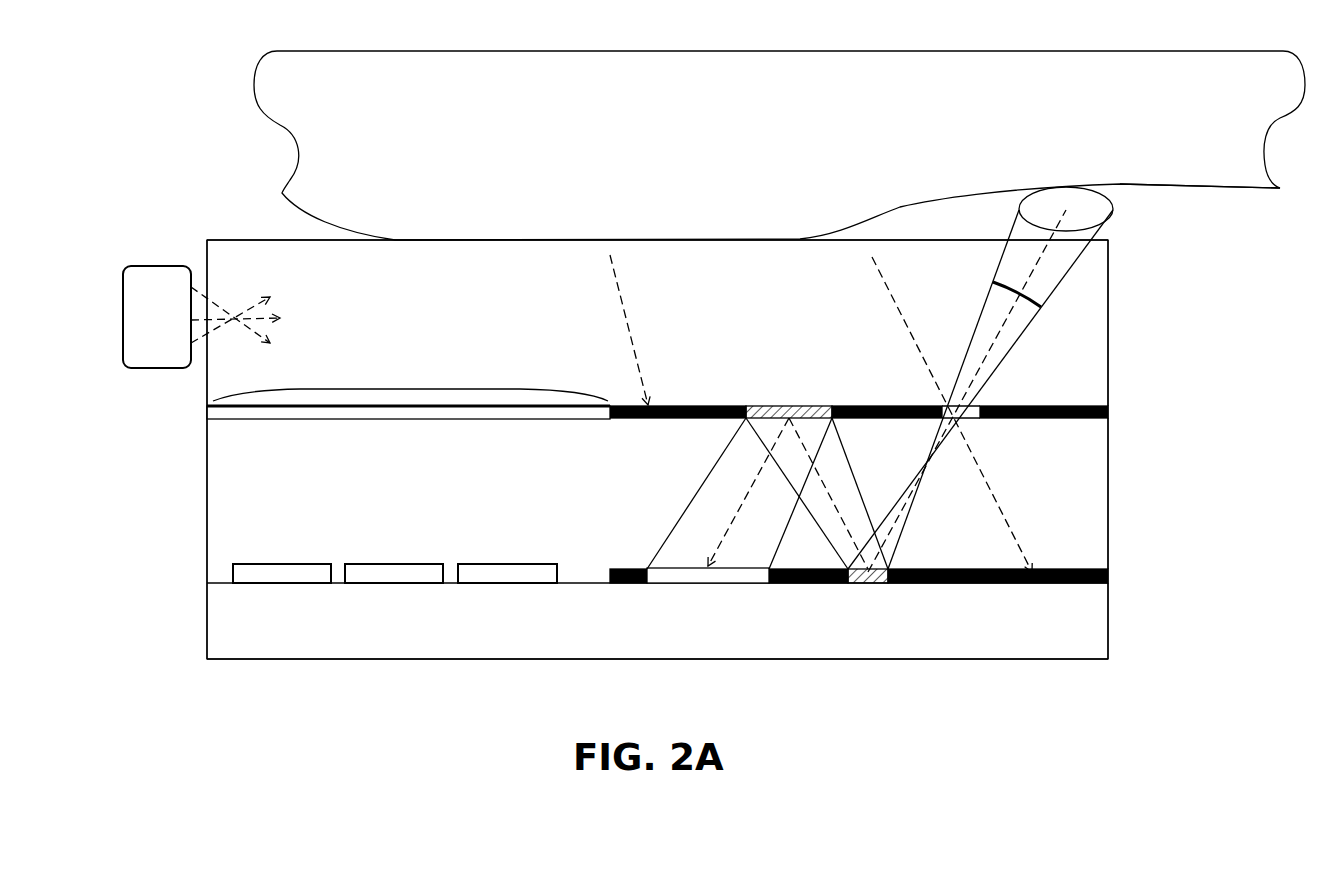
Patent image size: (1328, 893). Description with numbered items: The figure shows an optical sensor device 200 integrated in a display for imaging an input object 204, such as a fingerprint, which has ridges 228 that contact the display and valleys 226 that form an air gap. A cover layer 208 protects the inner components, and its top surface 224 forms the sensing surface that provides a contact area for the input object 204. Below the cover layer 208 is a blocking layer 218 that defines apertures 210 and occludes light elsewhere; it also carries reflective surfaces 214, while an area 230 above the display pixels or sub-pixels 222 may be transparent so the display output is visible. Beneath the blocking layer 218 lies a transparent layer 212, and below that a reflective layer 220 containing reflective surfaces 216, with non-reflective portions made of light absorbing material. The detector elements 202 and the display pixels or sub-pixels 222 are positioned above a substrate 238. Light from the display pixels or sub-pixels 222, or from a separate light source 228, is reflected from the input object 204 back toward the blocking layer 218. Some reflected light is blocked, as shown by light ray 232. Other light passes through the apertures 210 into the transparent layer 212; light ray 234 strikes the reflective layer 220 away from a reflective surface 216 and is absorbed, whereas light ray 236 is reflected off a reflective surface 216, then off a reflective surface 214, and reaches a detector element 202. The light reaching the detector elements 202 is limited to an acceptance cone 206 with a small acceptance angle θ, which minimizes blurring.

The optical sensor device 200 is at (150, 522).
The detector elements 202 is at (695, 585).
The input object 204 is at (779, 145).
The acceptance cone 206 is at (1003, 296).
The cover layer 208 is at (1108, 330).
The apertures 210 is at (975, 425).
The transparent layer 212 is at (1108, 490).
The reflective surfaces 214 is at (770, 405).
The reflective surfaces 216 is at (877, 585).
The blocking layer 218 is at (1090, 402).
The reflective layer 220 is at (1090, 568).
The display pixels or sub-pixels 222 is at (487, 562).
The top surface 224 is at (235, 240).
The valleys 226 is at (927, 220).
The ridges 228 is at (432, 213).
The area 230 is at (412, 388).
The light ray 232 is at (625, 318).
The light ray 234 is at (892, 298).
The light ray 236 is at (740, 503).
The substrate 238 is at (1108, 628).